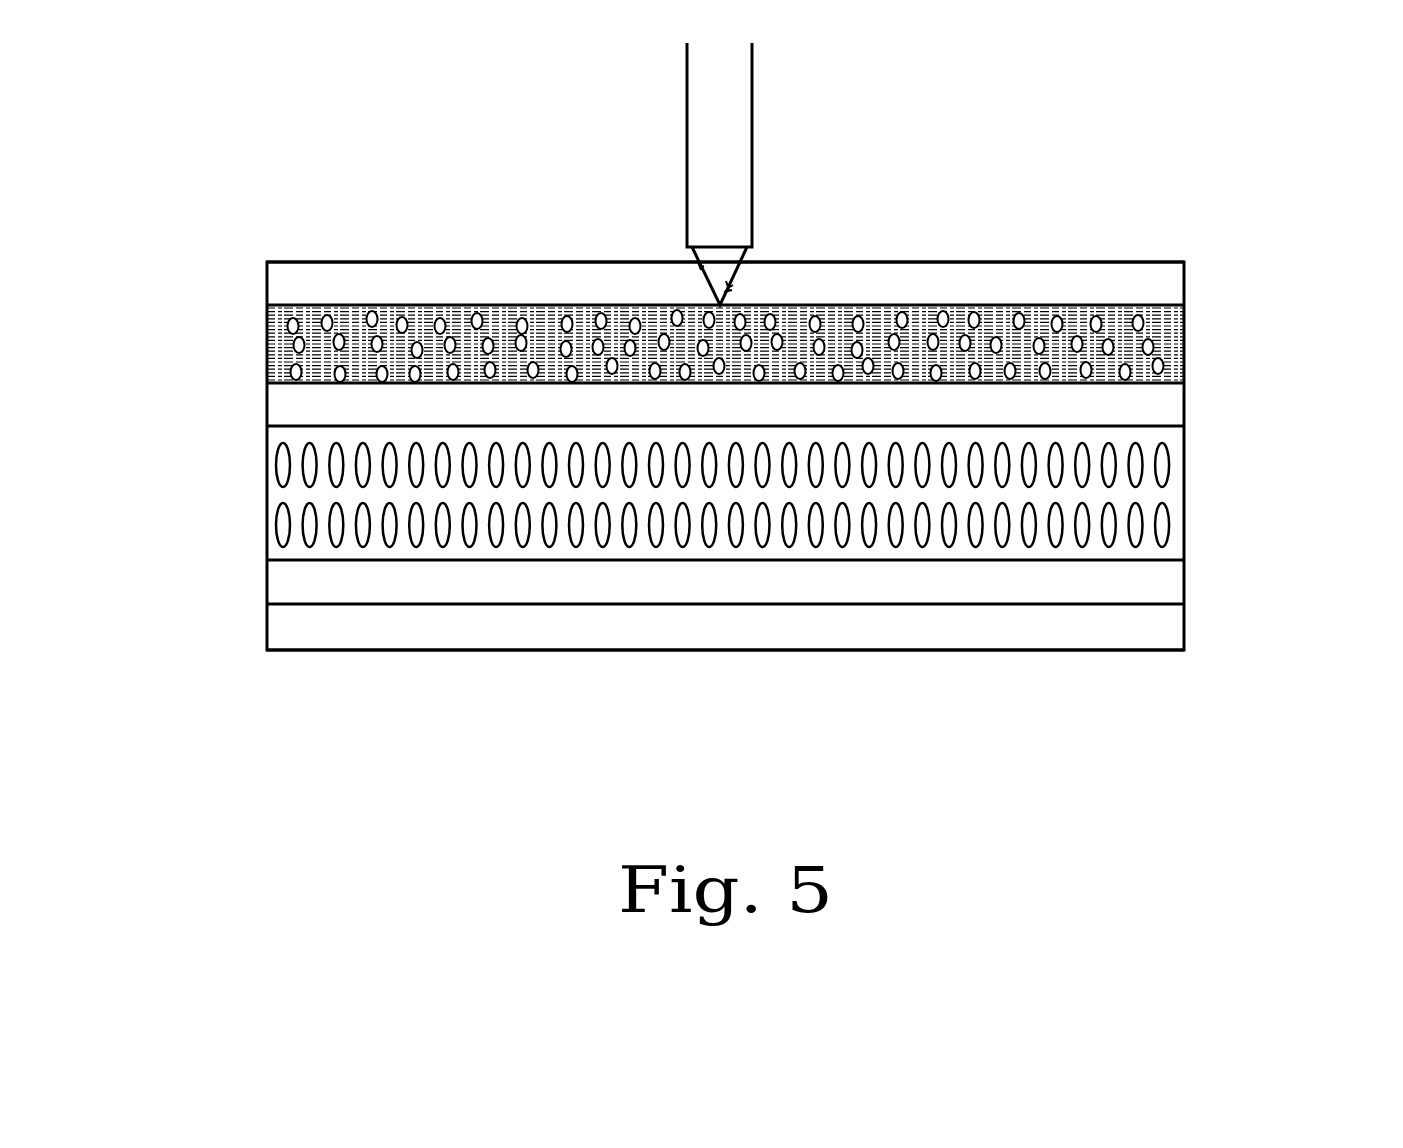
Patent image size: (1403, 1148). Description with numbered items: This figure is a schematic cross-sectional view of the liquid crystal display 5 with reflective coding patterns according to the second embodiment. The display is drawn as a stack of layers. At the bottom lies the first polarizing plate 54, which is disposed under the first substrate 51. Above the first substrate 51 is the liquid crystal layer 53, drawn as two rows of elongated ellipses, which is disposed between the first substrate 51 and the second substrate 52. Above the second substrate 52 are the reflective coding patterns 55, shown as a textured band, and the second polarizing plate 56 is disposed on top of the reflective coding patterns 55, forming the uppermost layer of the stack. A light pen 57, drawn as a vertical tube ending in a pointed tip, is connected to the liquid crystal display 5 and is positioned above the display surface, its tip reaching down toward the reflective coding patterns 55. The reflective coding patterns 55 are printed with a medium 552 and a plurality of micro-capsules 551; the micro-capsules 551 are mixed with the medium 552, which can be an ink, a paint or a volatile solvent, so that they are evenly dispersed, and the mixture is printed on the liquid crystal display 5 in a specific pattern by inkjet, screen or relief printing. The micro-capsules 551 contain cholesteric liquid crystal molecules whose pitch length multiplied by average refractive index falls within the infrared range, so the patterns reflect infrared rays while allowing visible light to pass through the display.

The liquid crystal display 5 is at (1290, 261).
The first substrate 51 is at (1167, 585).
The second substrate 52 is at (1165, 410).
The liquid crystal layer 53 is at (1170, 490).
The first polarizing plate 54 is at (1170, 636).
The reflective coding patterns 55 is at (696, 271).
The micro-capsules 551 is at (943, 307).
The medium 552 is at (517, 310).
The second polarizing plate 56 is at (1168, 290).
The light pen 57 is at (733, 152).